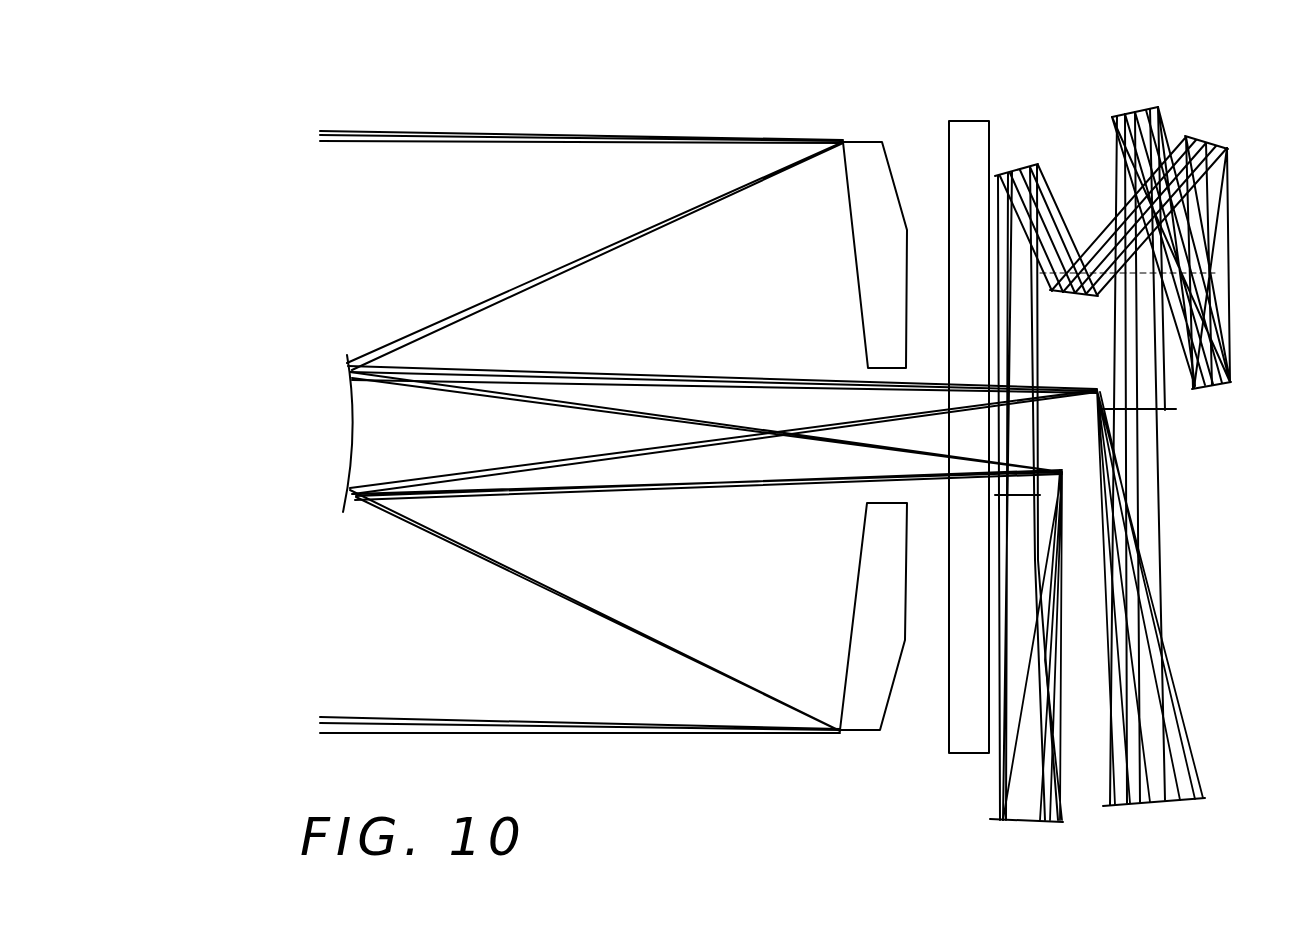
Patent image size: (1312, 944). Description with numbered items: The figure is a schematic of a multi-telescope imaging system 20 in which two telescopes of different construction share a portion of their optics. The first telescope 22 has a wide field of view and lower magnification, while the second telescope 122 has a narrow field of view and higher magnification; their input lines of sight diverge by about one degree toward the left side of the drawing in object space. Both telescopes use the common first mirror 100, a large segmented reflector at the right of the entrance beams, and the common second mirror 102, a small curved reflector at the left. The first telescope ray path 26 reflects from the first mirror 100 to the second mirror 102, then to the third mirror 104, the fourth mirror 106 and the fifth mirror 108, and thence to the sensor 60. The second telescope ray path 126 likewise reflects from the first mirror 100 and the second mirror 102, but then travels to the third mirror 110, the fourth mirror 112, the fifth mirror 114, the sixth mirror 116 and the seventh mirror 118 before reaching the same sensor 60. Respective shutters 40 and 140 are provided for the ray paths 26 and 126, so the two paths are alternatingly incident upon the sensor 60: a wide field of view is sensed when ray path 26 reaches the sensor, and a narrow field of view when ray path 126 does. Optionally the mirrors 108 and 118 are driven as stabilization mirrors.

The multi-telescope imaging system 20 is at (367, 76).
The first telescope 22 is at (1207, 765).
The first telescope ray path 26 is at (666, 381).
The shutter 40 is at (1016, 496).
The sensor 60 is at (1215, 391).
The first mirror 100 is at (862, 250).
The second mirror 102 is at (353, 426).
The third mirror 104 is at (1100, 385).
The fourth mirror 106 is at (1148, 806).
The fifth mirror 108 is at (1132, 116).
The third mirror 110 is at (1063, 470).
The fourth mirror 112 is at (1018, 823).
The fifth mirror 114 is at (1012, 172).
The sixth mirror 116 is at (1075, 298).
The seventh mirror 118 is at (1210, 138).
The second telescope 122 is at (993, 803).
The second telescope ray path 126 is at (578, 412).
The shutter 140 is at (1163, 409).